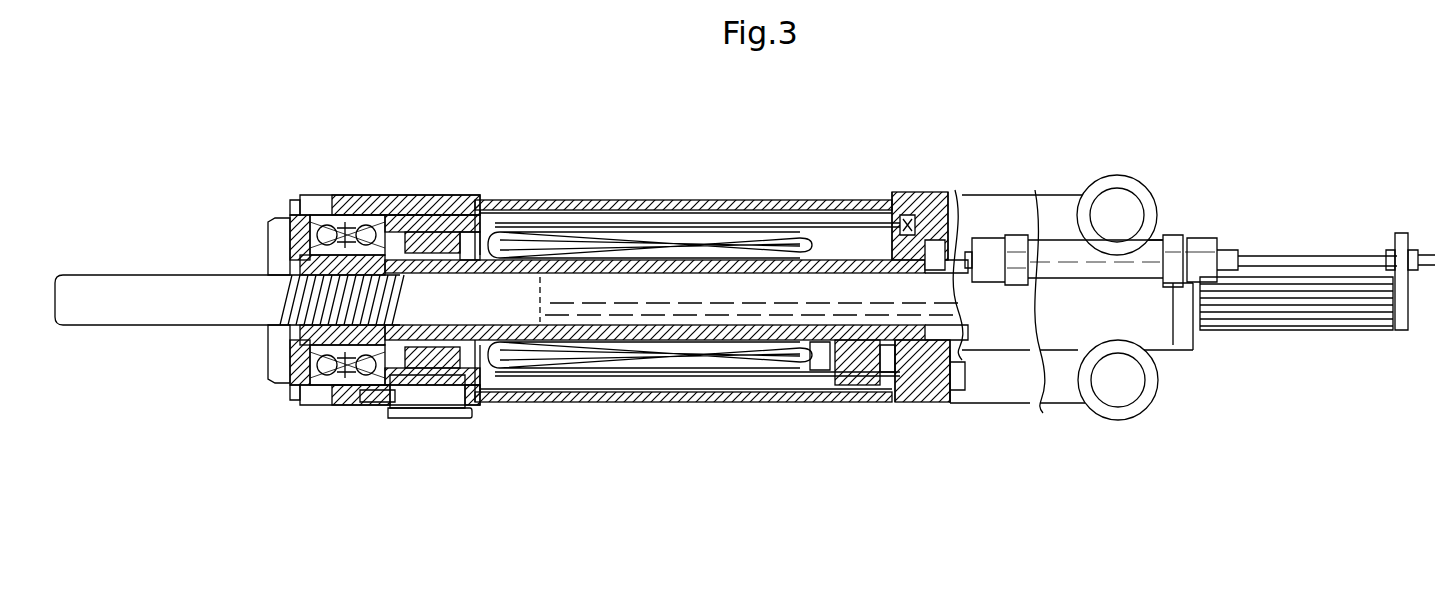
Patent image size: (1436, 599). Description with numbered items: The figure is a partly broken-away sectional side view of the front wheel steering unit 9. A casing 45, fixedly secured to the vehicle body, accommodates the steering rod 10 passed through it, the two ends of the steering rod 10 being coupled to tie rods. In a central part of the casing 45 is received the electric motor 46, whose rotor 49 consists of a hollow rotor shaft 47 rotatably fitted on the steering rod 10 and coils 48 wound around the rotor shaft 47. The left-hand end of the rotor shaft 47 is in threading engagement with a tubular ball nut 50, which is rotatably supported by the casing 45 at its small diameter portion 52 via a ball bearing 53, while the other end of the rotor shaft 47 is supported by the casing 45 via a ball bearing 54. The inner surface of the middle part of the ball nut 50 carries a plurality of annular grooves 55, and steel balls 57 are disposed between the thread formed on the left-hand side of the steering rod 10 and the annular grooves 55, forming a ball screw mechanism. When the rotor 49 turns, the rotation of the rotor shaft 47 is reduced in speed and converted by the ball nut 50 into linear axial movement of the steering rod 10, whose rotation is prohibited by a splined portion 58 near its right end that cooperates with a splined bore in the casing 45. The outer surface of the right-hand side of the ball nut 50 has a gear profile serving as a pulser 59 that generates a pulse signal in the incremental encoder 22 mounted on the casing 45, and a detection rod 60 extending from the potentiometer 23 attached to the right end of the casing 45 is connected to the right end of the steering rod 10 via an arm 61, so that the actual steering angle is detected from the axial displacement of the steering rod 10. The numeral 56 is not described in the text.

The front wheel steering unit 9 is at (897, 188).
The steering rod 10 is at (805, 283).
The incremental encoder 22 is at (430, 402).
The potentiometer 23 is at (1153, 236).
The casing 45 is at (676, 402).
The electric motor 46 is at (748, 220).
The rotor shaft 47 is at (732, 372).
The coils 48 is at (775, 356).
The rotor 49 is at (786, 460).
The ball nut 50 is at (352, 240).
The small diameter portion 52 is at (290, 233).
The ball bearing 53 is at (378, 398).
The ball bearing 54 is at (912, 232).
The annular grooves 55 is at (352, 395).
The threaded shaft 56 is at (203, 328).
The steel balls 57 is at (292, 385).
The splined portion 58 is at (1283, 318).
The pulser 59 is at (420, 232).
The detection rod 60 is at (1310, 256).
The arm 61 is at (1402, 233).